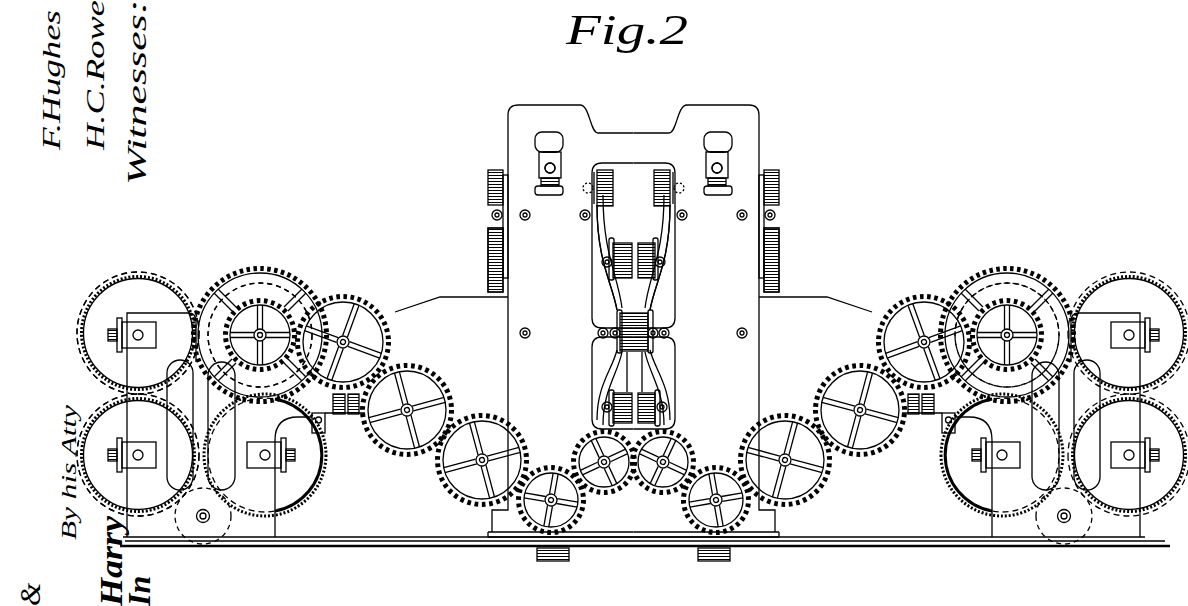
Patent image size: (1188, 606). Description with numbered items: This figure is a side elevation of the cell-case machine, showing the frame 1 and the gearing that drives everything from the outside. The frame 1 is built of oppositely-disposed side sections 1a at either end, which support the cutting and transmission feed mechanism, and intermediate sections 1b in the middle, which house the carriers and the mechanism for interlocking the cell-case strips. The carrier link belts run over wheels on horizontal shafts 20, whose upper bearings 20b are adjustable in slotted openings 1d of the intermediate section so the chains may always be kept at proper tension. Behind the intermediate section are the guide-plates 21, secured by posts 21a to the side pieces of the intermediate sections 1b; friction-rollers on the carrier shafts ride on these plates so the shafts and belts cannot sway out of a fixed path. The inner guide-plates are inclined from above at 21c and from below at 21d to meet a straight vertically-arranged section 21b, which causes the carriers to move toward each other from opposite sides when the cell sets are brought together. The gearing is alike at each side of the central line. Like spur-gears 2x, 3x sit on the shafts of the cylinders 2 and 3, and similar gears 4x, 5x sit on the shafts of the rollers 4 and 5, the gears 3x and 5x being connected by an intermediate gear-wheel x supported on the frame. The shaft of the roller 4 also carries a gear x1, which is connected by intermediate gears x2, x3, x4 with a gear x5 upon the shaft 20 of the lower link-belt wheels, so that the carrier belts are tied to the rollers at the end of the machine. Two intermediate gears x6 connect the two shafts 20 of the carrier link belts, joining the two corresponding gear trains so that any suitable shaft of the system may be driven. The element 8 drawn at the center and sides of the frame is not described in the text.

The frame 1 is at (602, 333).
The side sections 1a is at (633, 417).
The intermediate sections 1b is at (633, 260).
The slotted openings 1d is at (548, 133).
The cylinder 2 is at (632, 333).
The spur-gear 2x is at (82, 322).
The cylinder 3 is at (632, 455).
The spur-gear 3x is at (97, 414).
The roller 4 is at (634, 335).
The gear 4x is at (298, 290).
The roller 5 is at (633, 455).
The gear 5x is at (318, 488).
The brushes 8 is at (488, 250).
The horizontal shafts 20 is at (546, 168).
The upper bearings 20b is at (560, 168).
The guide-plates 21 is at (490, 199).
The posts 21a is at (492, 215).
The straight vertically-arranged section 21b is at (668, 324).
The upper inclined portion of guide-plate 21c is at (598, 233).
The lower inclined portion of guide-plate 21d is at (668, 418).
The intermediate gear-wheel x is at (216, 530).
The gear x1 is at (634, 343).
The intermediate gear x2 is at (388, 355).
The intermediate gear x3 is at (405, 457).
The intermediate gear x4 is at (478, 498).
The gear x5 is at (578, 508).
The intermediate gears x6 is at (612, 489).